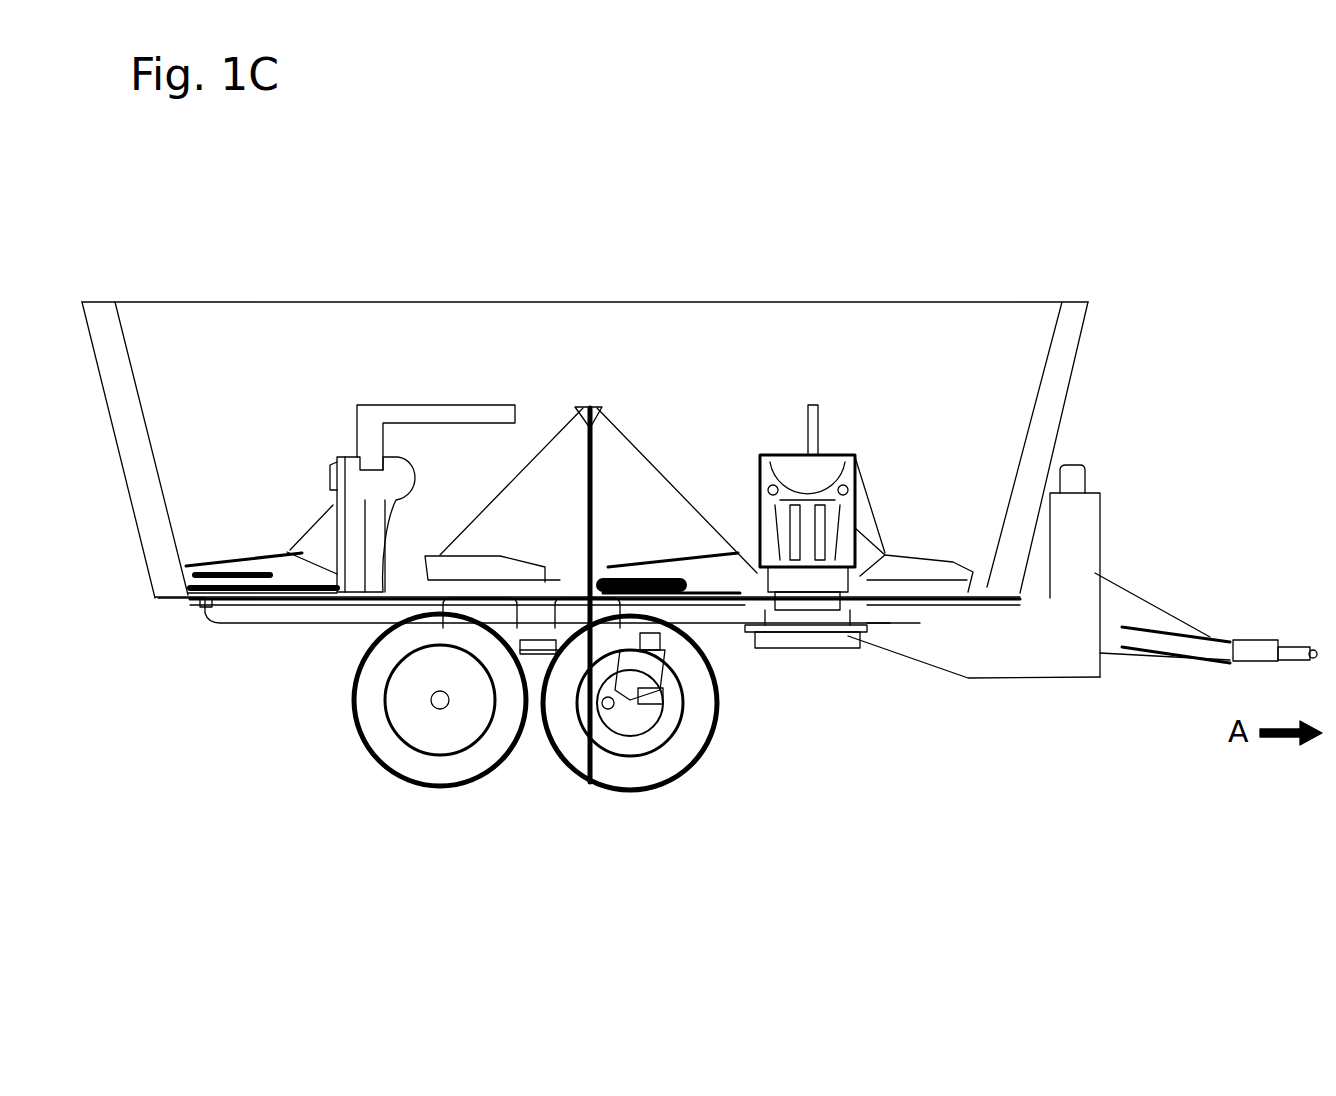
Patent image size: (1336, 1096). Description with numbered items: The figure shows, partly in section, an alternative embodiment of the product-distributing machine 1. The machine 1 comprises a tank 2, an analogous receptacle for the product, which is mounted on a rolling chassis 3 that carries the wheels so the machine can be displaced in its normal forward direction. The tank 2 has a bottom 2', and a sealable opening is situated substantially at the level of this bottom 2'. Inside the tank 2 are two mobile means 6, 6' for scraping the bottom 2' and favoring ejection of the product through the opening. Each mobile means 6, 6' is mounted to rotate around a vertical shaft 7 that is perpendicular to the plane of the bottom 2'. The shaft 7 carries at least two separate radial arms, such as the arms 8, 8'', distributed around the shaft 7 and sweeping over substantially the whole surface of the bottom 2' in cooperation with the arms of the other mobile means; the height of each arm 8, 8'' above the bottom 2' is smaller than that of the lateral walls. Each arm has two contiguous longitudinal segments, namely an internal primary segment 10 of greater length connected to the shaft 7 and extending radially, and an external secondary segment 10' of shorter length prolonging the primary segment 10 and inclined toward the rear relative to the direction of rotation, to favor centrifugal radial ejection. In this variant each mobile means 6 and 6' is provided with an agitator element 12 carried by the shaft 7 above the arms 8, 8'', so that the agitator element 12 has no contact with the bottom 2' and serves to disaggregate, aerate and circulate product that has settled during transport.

The machine 1 is at (213, 720).
The tank 2 is at (628, 411).
The bottom of tank 2' is at (1132, 627).
The rolling chassis 3 is at (575, 812).
The mobile means 6 is at (741, 378).
The mobile means 6' is at (345, 389).
The vertical shaft 7 is at (333, 458).
The radial arm 8 is at (686, 638).
The radial arm 8'' is at (470, 659).
The primary segment 10 is at (313, 671).
The secondary segment 10' is at (557, 695).
The agitator element 12 is at (472, 413).